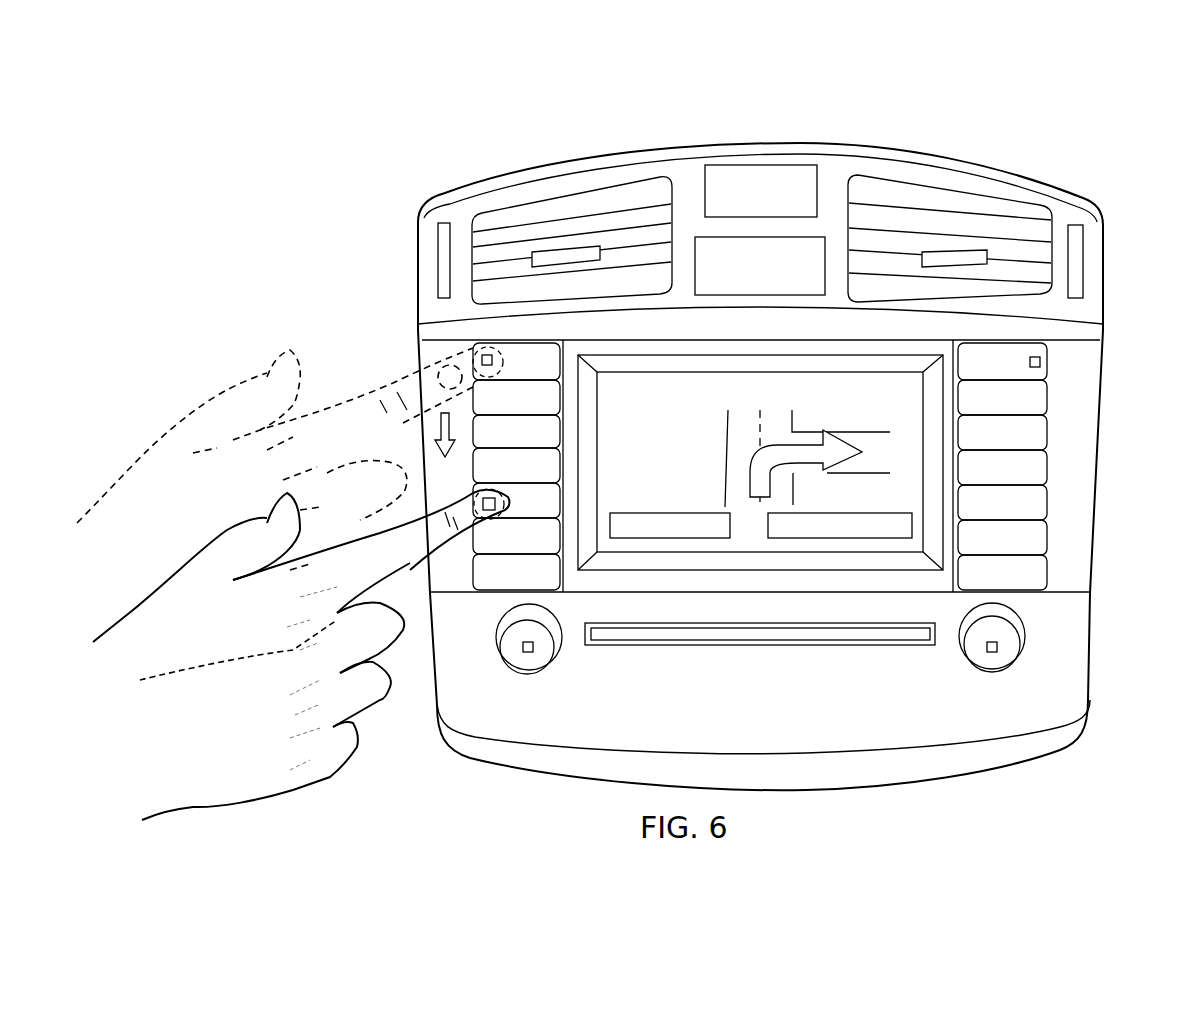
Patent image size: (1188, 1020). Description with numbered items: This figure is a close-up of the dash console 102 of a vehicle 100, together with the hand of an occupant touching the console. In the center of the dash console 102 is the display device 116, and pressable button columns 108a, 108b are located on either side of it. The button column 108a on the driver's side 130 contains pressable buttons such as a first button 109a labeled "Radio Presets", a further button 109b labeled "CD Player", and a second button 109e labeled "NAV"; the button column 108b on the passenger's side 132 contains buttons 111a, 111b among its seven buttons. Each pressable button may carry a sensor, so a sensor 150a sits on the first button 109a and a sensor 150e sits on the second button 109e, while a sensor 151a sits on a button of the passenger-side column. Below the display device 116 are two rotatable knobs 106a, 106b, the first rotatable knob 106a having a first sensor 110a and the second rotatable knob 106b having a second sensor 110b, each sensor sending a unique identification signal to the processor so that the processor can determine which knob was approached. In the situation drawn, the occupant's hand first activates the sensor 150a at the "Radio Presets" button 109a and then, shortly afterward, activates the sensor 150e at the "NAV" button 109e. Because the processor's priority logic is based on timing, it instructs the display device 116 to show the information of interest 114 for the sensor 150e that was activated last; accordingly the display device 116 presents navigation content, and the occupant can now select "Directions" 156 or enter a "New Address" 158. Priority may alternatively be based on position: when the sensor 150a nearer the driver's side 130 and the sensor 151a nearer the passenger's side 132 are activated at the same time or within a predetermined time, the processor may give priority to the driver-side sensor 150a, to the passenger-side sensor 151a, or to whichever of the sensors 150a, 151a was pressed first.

The vehicle 100 is at (1055, 140).
The dash console 102 is at (1108, 207).
The first rotatable knob 106a is at (502, 622).
The second rotatable knob 106b is at (1020, 622).
The pressable button column 108a is at (517, 340).
The pressable button column 108b is at (995, 340).
The first button 109a is at (563, 370).
The pressable button 109b is at (563, 405).
The second button 109e is at (553, 500).
The first sensor 110a is at (522, 647).
The second sensor 110b is at (997, 647).
The button 111a is at (1047, 373).
The button 111b is at (1047, 410).
The information of interest 114 is at (735, 340).
The display device 116 is at (848, 370).
The driver's side 130 is at (622, 142).
The passenger's side 132 is at (903, 140).
The sensor 150a is at (472, 358).
The sensor 150e is at (500, 487).
The sensor 151a is at (1040, 360).
The Directions selection 156 is at (688, 513).
The New Address selection 158 is at (878, 513).